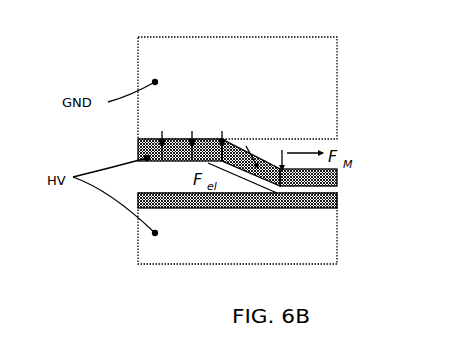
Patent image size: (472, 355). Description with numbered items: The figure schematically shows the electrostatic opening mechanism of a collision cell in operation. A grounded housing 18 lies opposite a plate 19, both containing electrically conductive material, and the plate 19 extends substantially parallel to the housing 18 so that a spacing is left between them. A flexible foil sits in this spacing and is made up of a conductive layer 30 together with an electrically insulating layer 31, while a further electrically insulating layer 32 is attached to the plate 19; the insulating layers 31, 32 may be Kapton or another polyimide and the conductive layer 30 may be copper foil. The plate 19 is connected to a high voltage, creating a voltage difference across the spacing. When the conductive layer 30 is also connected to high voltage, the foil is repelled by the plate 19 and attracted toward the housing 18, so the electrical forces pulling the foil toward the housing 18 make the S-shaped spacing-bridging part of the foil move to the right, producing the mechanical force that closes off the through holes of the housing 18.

The housing 18 is at (338, 63).
The plate 19 is at (338, 237).
The conductive layer 30 is at (175, 157).
The electrically insulating layer 31 is at (337, 178).
The further electrically insulating layer 32 is at (338, 199).